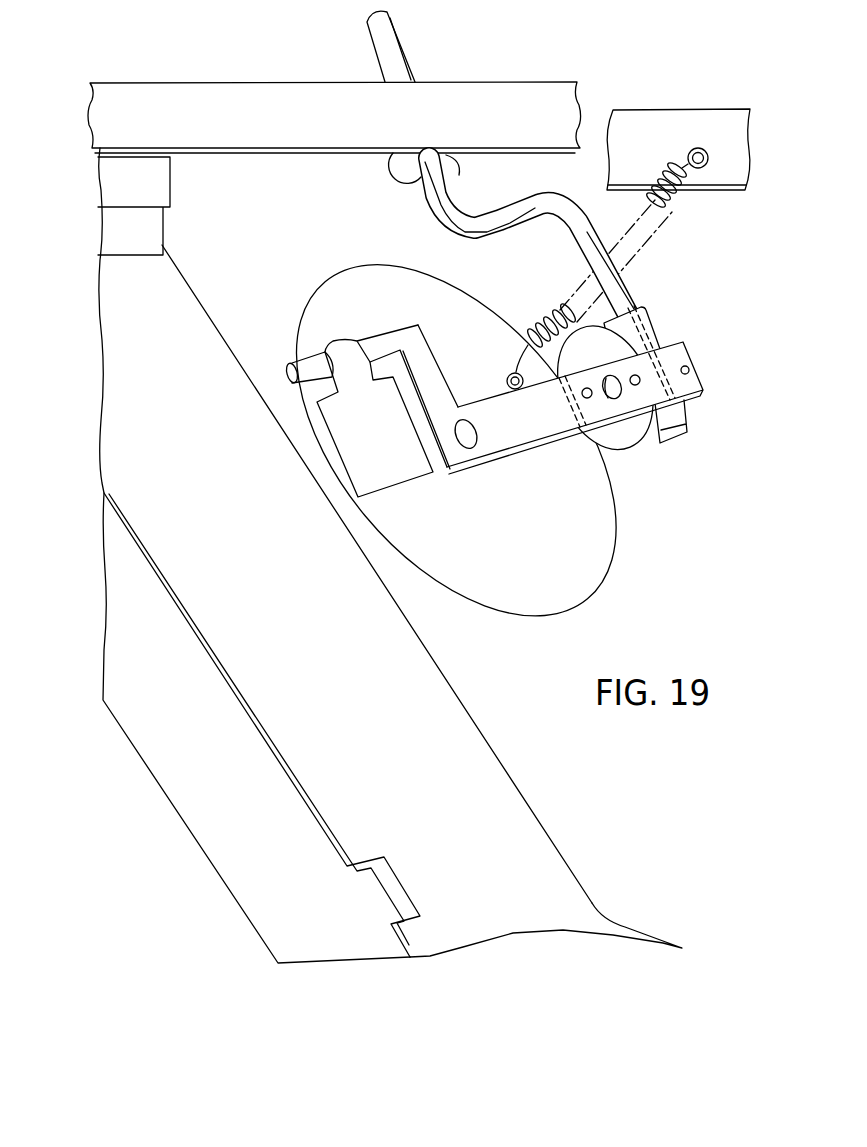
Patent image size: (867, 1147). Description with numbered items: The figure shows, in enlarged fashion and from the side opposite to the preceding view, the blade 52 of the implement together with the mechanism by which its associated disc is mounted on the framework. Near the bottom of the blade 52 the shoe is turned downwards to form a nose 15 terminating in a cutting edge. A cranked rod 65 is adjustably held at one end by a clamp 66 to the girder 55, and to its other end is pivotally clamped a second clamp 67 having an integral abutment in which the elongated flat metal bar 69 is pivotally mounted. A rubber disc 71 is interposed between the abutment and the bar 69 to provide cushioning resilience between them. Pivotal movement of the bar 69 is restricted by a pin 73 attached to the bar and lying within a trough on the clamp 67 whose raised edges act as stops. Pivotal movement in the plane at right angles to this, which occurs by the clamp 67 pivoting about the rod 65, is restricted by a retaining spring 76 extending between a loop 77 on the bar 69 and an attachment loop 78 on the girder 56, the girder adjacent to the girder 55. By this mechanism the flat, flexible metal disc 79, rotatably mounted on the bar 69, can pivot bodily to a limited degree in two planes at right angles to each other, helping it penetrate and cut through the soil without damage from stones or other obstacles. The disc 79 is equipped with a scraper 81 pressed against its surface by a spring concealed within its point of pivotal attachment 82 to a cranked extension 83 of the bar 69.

The nose 15 is at (636, 934).
The blade 52 is at (480, 745).
The girder 55 is at (470, 90).
The girder 56 is at (683, 122).
The cranked rod 65 is at (390, 52).
The clamp 66 is at (396, 156).
The second clamp 67 is at (688, 408).
The elongated flat metal bar 69 is at (502, 435).
The rubber disc 71 is at (628, 442).
The pin 73 is at (690, 368).
The retaining spring 76 is at (670, 208).
The loop 77 is at (512, 373).
The attachment loop 78 is at (688, 154).
The flat flexible metal disc 79 is at (593, 575).
The scraper 81 is at (387, 477).
The point of pivotal attachment 82 is at (343, 355).
The cranked extension 83 is at (307, 365).